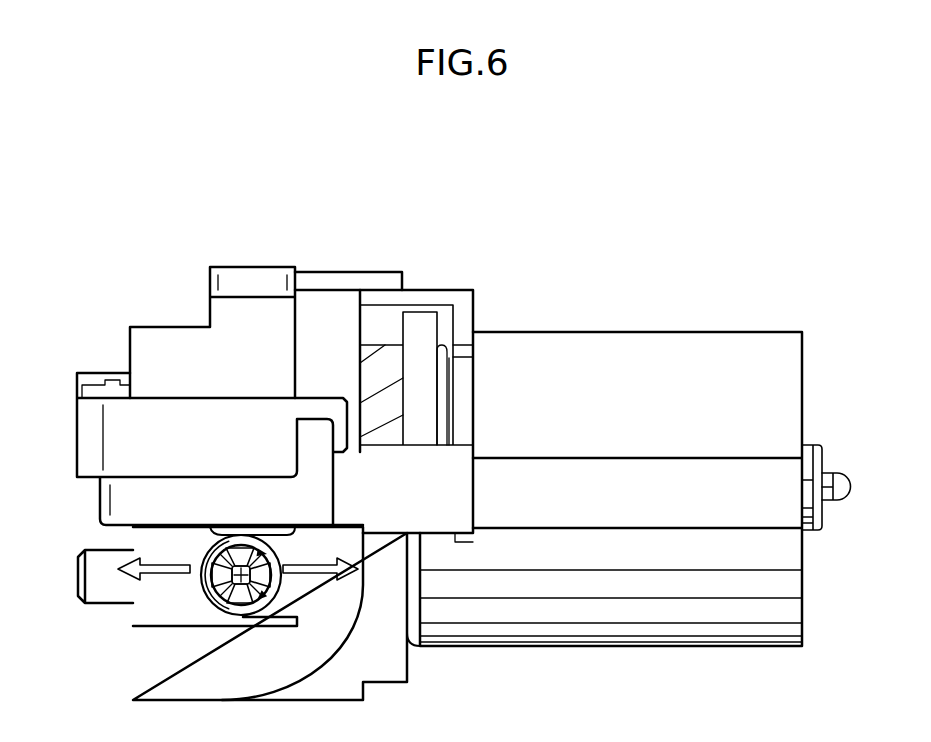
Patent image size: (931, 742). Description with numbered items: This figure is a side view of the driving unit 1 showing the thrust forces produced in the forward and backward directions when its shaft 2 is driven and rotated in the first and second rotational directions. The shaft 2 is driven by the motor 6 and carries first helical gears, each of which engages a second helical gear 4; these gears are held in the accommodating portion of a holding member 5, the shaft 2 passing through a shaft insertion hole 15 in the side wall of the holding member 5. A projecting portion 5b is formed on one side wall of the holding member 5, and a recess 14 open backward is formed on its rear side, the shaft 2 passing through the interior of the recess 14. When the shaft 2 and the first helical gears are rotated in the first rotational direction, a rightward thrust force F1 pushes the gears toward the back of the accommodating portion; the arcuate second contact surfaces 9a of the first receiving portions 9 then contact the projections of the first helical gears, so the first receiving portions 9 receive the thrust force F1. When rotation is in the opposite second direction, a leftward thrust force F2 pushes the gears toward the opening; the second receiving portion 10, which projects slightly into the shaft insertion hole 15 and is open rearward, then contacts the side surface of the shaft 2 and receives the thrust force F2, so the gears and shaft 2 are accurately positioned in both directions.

The driving unit 1 is at (120, 278).
The shaft 2 is at (233, 577).
The second helical gear 4 is at (382, 373).
The holding member 5 is at (248, 312).
The projecting portion 5b is at (192, 617).
The motor 6 is at (672, 353).
The first receiving portion 9 is at (317, 577).
The second contact surface 9a is at (230, 540).
The second receiving portion 10 is at (210, 545).
The recess 14 is at (223, 602).
The shaft insertion hole 15 is at (257, 587).
The thrust force F1 is at (289, 594).
The thrust force F2 is at (177, 572).